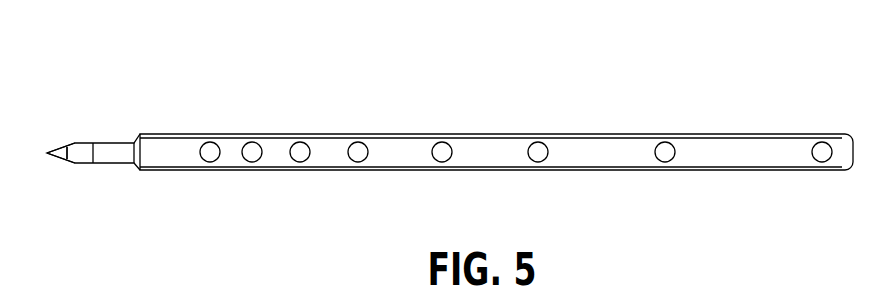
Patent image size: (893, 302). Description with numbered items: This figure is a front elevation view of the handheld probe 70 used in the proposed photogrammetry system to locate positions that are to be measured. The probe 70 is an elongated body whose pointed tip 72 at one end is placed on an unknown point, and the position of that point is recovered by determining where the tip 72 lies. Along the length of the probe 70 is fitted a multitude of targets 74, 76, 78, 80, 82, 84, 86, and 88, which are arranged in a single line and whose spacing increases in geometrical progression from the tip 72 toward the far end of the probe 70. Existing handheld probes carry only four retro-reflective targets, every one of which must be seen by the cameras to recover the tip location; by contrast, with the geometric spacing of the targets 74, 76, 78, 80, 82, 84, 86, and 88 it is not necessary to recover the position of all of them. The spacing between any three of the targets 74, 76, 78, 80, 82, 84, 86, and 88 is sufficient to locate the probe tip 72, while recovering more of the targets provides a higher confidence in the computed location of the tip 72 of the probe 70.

The handheld probe 70 is at (496, 133).
The tip 72 is at (52, 156).
The target 74 is at (207, 142).
The target 76 is at (251, 153).
The target 78 is at (297, 142).
The target 80 is at (357, 153).
The target 82 is at (440, 143).
The target 84 is at (537, 153).
The target 86 is at (661, 142).
The target 88 is at (821, 153).